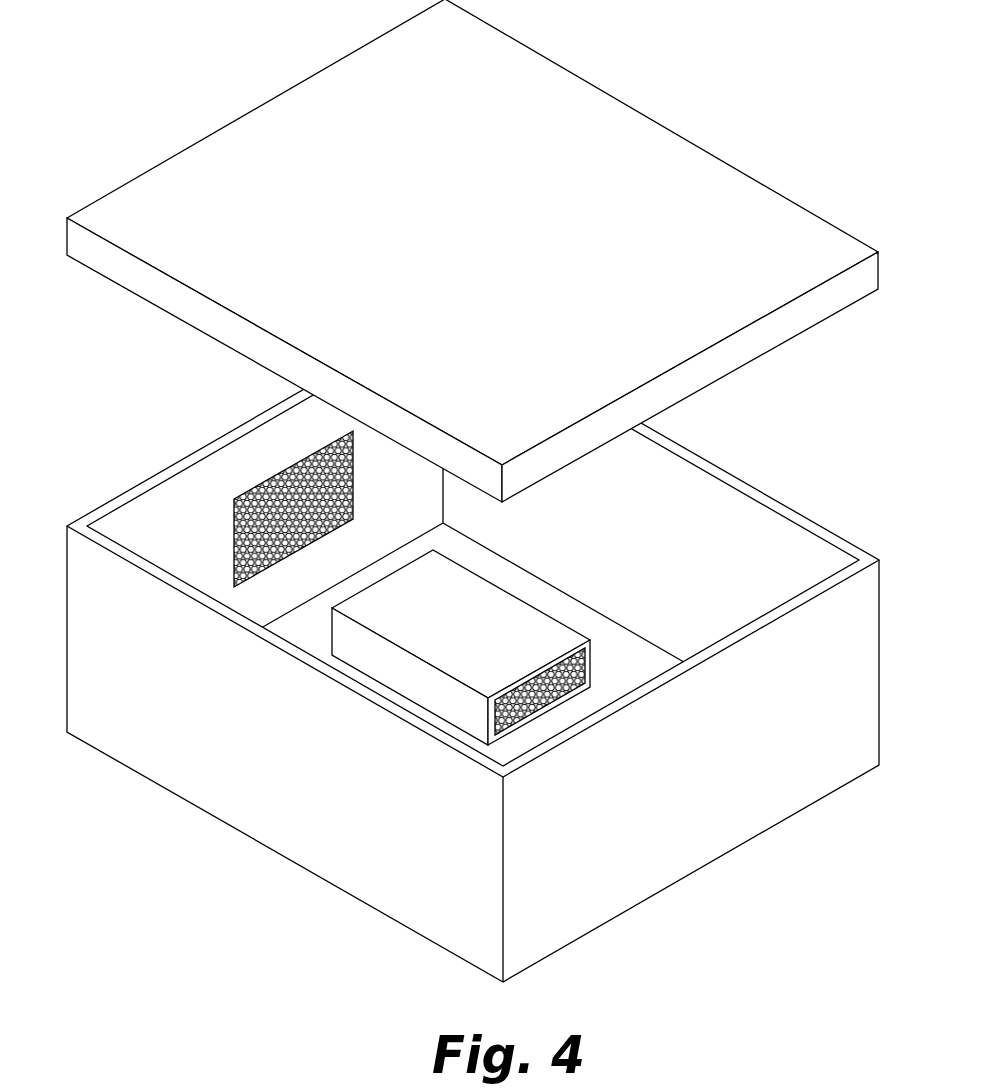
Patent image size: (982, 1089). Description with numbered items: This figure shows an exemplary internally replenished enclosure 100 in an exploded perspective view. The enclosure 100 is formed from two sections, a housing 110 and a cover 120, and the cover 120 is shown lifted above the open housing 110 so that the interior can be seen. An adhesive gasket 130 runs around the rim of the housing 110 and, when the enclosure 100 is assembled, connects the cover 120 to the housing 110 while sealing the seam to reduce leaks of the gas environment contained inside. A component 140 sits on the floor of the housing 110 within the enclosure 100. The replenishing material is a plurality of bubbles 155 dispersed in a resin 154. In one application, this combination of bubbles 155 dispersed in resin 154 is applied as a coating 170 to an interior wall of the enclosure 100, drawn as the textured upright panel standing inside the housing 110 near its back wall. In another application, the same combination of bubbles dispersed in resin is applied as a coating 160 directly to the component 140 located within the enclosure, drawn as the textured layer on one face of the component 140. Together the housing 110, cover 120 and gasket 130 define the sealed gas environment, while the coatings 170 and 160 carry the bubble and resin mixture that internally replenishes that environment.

The enclosure 100 is at (751, 79).
The housing 110 is at (632, 893).
The cover 120 is at (625, 127).
The adhesive gasket 130 is at (807, 525).
The component 140 is at (493, 640).
The coating 160 is at (587, 667).
The coating 170 is at (251, 482).
The resin 154 is at (240, 495).
The bubbles 155 is at (263, 485).